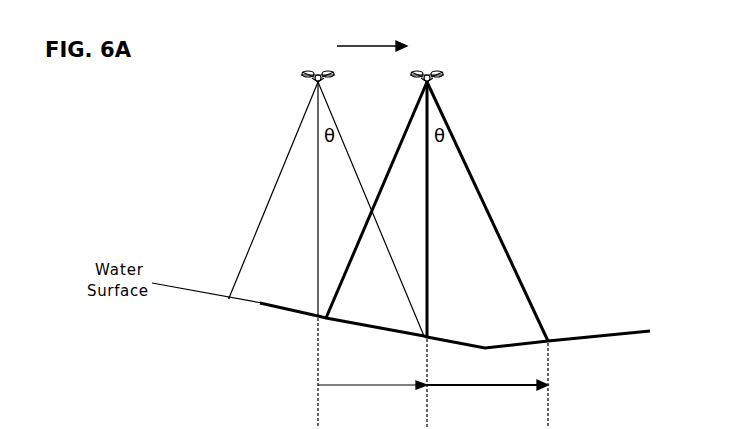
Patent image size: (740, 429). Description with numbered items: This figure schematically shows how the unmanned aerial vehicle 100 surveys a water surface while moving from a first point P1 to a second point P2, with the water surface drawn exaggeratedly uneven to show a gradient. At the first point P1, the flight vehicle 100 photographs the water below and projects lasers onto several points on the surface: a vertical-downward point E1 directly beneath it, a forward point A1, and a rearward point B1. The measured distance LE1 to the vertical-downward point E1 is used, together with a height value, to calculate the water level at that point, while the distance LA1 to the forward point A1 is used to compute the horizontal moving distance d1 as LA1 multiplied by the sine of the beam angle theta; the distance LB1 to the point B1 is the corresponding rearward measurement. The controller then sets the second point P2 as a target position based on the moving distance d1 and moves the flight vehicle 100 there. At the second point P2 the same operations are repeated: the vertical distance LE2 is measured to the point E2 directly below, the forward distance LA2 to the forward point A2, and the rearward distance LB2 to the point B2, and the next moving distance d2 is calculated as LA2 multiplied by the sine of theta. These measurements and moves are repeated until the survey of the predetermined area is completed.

The unmanned aerial vehicle 100 is at (314, 70).
The first point P1 is at (301, 92).
The second point P2 is at (446, 92).
The distance to forward point A1 LA1 is at (371, 209).
The first measurement line B from P1 LB1 is at (273, 190).
The distance to vertical-downward point E1 LE1 is at (300, 199).
The distance to forward point A2 LA2 is at (487, 211).
The second measurement line B from P2 LB2 is at (376, 200).
The vertical altitude line from P2 LE2 is at (446, 209).
The forward point A1 is at (408, 321).
The water surface point B1 is at (218, 286).
The vertical-downward point E1 is at (304, 300).
The water surface point A2 is at (560, 326).
The water surface point B2 is at (342, 308).
The water surface point E2 below P2 E2 is at (442, 321).
The moving distance d1 is at (372, 397).
The moving distance d2 is at (487, 397).